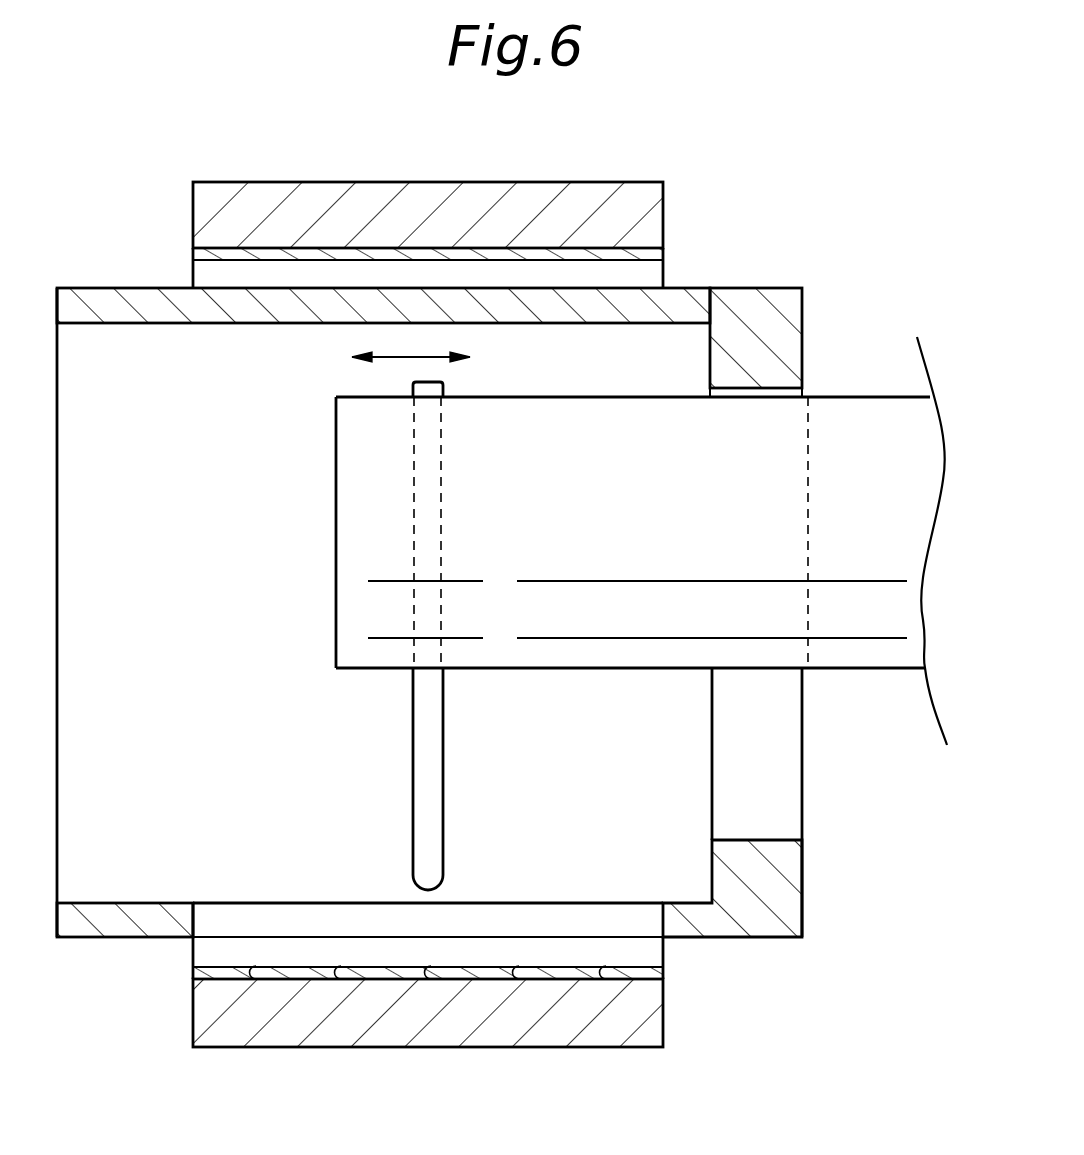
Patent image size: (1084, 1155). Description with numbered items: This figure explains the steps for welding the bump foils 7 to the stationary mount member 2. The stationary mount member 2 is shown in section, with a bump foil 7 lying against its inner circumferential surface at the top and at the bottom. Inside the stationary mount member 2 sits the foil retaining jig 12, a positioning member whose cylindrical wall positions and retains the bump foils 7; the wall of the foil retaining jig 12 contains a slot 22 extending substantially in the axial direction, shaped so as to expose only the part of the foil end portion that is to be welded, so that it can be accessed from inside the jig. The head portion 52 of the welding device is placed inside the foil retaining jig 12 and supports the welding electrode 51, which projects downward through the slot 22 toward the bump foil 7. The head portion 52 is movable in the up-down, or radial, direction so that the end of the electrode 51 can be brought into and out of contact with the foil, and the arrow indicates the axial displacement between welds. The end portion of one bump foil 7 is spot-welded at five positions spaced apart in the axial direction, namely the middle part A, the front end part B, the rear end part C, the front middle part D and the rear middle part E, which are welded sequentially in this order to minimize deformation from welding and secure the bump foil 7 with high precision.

The stationary mount member 2 is at (650, 210).
The bump foil 7 is at (665, 256).
The foil retaining jig 12 is at (782, 888).
The slot 22 is at (195, 920).
The welding electrode 51 is at (435, 777).
The head portion 52 is at (542, 412).
The middle part A is at (428, 967).
The front end part B is at (600, 967).
The rear end part C is at (257, 973).
The front middle part D is at (513, 967).
The rear middle part E is at (340, 970).